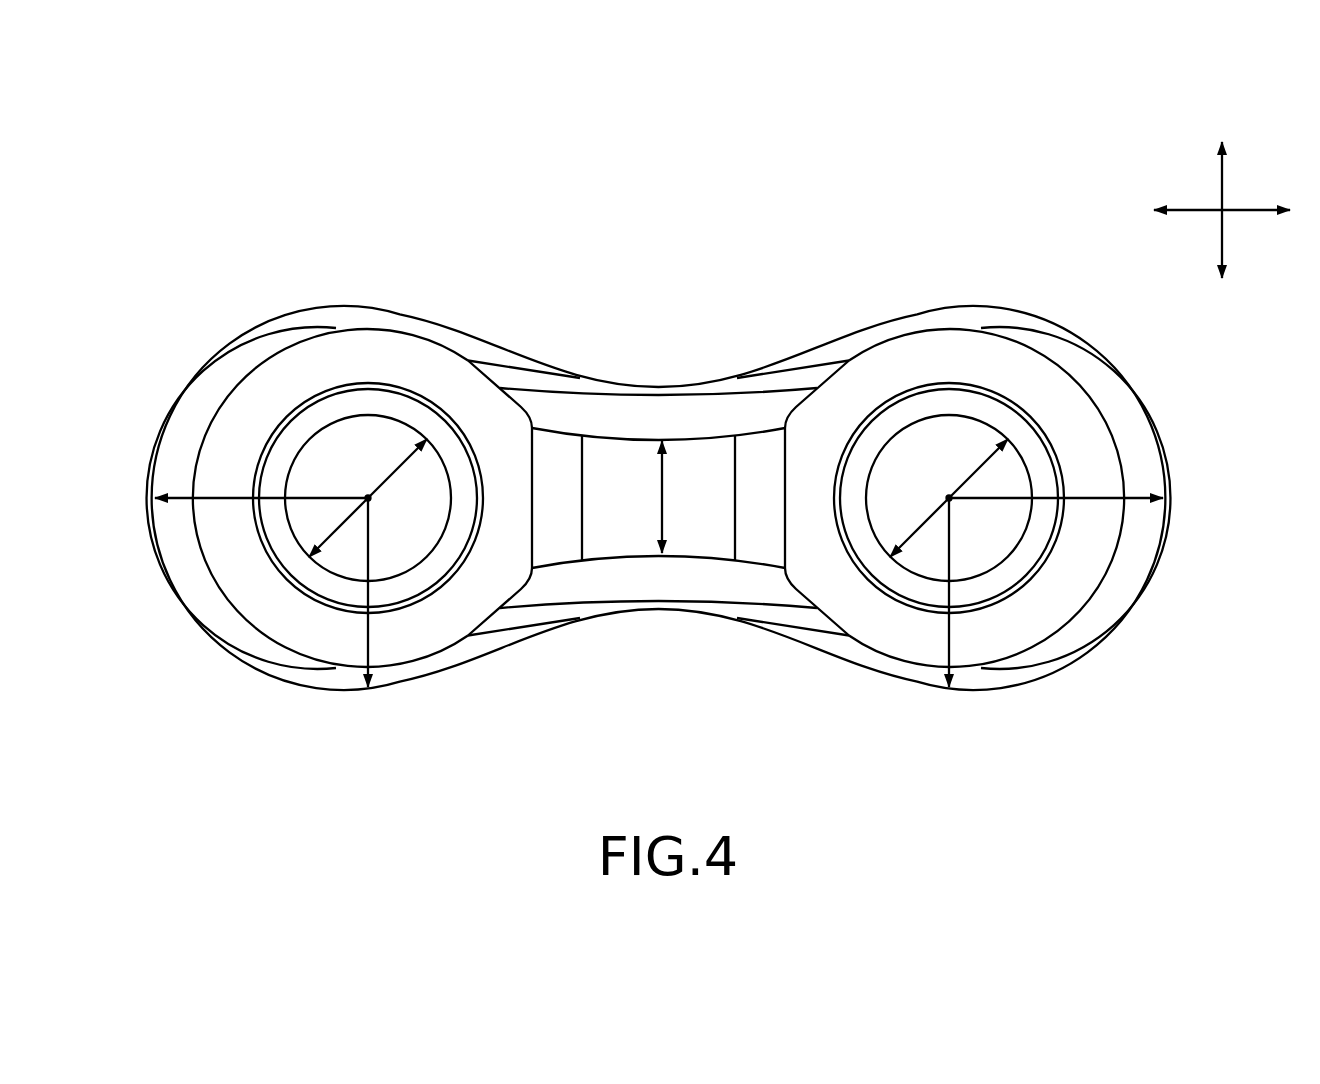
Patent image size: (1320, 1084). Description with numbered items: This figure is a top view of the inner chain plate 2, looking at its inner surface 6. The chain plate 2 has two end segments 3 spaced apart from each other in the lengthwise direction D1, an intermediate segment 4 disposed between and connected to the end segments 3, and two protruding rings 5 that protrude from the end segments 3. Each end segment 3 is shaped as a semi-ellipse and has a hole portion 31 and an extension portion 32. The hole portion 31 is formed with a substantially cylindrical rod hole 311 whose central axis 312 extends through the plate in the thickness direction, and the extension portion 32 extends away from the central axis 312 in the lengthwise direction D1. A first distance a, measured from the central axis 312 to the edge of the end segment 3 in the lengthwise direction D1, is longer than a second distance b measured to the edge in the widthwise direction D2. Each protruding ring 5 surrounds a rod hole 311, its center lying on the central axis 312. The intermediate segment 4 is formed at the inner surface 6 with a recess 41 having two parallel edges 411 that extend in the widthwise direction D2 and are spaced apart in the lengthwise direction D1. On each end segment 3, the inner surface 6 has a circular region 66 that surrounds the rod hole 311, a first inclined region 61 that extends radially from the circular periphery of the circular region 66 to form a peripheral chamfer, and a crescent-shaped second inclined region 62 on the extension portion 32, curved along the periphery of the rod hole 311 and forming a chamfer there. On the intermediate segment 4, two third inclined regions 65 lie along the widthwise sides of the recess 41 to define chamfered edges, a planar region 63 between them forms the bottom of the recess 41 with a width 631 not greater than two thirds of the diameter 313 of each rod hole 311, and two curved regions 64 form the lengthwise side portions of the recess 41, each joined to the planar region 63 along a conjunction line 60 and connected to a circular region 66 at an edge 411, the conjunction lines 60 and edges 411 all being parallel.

The chain plate 2 is at (1135, 359).
The end segments 3 is at (162, 431).
The hole portion 31 is at (487, 595).
The rod hole 311 is at (306, 472).
The central axis 312 is at (370, 490).
The diameter 313 is at (396, 466).
The extension portion 32 is at (183, 542).
The intermediate segment 4 is at (628, 381).
The recess 41 is at (712, 530).
The edges 411 is at (530, 467).
The protruding rings 5 is at (437, 567).
The inner surface 6 is at (722, 416).
The conjunction line 60 is at (587, 517).
The first inclined region 61 is at (317, 672).
The second inclined region 62 is at (212, 592).
The planar region 63 is at (688, 457).
The width 631 is at (662, 500).
The curved regions 64 is at (550, 530).
The third inclined regions 65 is at (582, 416).
The circular region 66 is at (277, 623).
The first distance a is at (213, 498).
The second distance b is at (368, 638).
The lengthwise direction D1 is at (1238, 212).
The widthwise direction D2 is at (1222, 178).